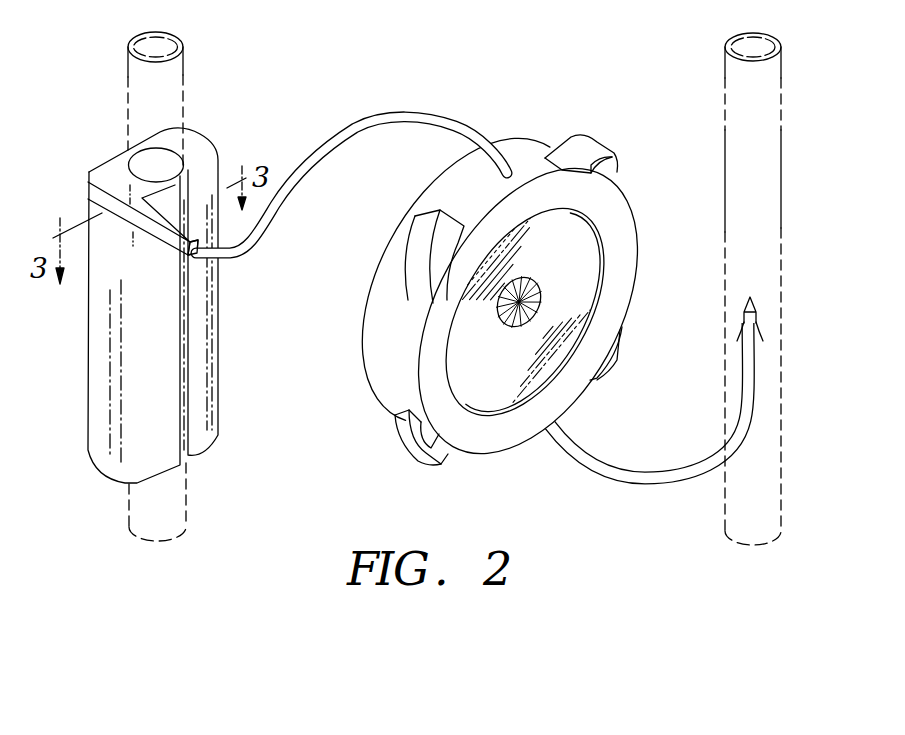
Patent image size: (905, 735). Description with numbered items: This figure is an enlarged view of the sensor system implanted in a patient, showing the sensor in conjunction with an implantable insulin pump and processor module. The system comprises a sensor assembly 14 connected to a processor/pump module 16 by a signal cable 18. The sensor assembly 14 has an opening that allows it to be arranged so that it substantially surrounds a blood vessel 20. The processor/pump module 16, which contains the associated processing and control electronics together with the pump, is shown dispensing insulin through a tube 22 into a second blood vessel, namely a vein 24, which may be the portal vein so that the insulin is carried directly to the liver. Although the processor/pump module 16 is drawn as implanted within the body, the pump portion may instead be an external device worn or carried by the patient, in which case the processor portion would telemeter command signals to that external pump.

The sensor assembly 14 is at (115, 383).
The processor/pump module 16 is at (617, 231).
The signal cable 18 is at (421, 114).
The blood vessel 20 is at (185, 95).
The tube 22 is at (624, 484).
The vein 24 is at (770, 188).